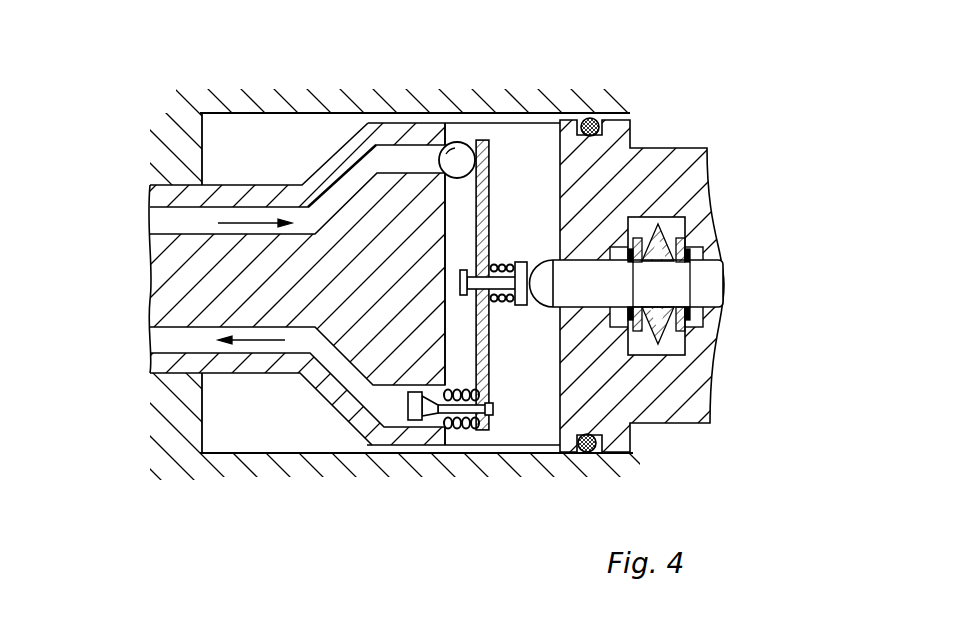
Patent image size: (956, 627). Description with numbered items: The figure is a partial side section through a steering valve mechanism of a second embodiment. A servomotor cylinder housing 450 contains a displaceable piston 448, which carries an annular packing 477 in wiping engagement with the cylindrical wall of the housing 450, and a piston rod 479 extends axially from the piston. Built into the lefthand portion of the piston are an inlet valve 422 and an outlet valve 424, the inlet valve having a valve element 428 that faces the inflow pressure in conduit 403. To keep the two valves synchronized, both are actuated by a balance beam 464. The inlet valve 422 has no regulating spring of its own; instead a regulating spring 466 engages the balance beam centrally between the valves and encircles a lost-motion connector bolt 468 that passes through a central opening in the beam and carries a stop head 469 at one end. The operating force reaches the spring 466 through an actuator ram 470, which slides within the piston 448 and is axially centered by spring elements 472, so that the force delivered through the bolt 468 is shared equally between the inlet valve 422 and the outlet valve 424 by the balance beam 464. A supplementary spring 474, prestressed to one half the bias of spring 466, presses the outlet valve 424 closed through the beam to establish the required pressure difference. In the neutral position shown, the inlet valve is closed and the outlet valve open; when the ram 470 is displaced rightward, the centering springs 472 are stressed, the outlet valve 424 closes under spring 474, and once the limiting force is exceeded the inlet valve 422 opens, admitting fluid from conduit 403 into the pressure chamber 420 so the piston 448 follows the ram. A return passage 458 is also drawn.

The pressure chamber 420 is at (212, 155).
The conduit 403 is at (285, 217).
The servomotor cylinder housing 450 is at (307, 113).
The piston 448 is at (370, 135).
The stop head 469 is at (462, 268).
The inlet valve 422 is at (458, 130).
The inlet valve element 428 is at (467, 148).
The balance beam 464 is at (502, 148).
The annular packing 477 is at (595, 120).
The spring elements 472 is at (663, 230).
The piston rod 479 is at (185, 278).
The return passage 458 is at (257, 347).
The outlet valve 424 is at (455, 438).
The supplementary spring 474 is at (462, 430).
The lost-motion connector bolt 468 is at (500, 300).
The regulating spring 466 is at (506, 299).
The actuator ram 470 is at (600, 297).